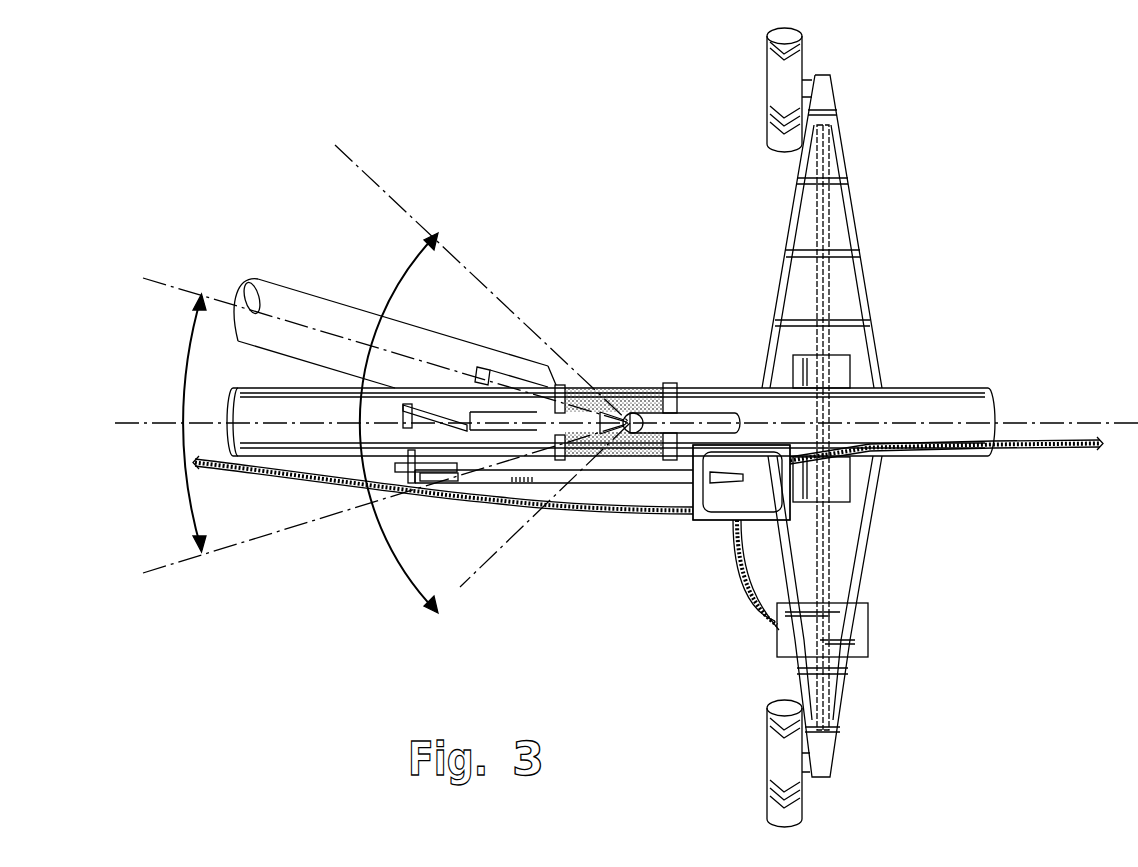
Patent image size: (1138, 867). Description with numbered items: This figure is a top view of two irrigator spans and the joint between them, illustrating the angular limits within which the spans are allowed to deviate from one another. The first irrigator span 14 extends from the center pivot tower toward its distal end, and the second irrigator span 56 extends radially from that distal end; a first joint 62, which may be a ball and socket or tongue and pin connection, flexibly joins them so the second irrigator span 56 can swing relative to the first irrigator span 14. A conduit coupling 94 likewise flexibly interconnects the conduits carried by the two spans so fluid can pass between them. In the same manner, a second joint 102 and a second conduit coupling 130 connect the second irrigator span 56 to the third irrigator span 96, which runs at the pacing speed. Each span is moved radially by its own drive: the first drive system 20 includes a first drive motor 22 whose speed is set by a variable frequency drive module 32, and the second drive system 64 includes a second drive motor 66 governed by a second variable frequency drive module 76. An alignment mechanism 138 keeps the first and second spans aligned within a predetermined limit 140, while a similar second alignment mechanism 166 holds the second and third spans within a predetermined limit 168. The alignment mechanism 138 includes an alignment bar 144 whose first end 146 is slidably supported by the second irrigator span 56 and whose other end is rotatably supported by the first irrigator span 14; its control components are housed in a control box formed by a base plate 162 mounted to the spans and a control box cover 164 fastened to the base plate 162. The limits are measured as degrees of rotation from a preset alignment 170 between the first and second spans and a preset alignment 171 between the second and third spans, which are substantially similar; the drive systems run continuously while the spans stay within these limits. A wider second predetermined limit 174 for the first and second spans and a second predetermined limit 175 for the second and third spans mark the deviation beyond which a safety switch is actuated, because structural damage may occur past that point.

The first irrigator span 14 is at (648, 369).
The second irrigator span 56 is at (945, 386).
The first drive system 20 is at (930, 427).
The second drive system 64 is at (908, 550).
The first drive motor 22 is at (911, 488).
The second drive motor 66 is at (852, 484).
The variable frequency drive module 32 is at (892, 648).
The second variable frequency drive module 76 is at (868, 625).
The third irrigator span 96 is at (290, 384).
The first joint 62 is at (669, 353).
The second joint 102 is at (650, 385).
The conduit coupling 94 is at (540, 382).
The second conduit coupling 130 is at (617, 385).
The alignment mechanism 138 is at (662, 557).
The second alignment mechanism 166 is at (708, 540).
The predetermined limit 140 is at (193, 377).
The predetermined limit 168 is at (190, 362).
The alignment bar 144 is at (623, 484).
The first end 146 is at (420, 484).
The base plate 162 is at (697, 521).
The control box cover 164 is at (722, 522).
The preset alignment 170 is at (587, 366).
The preset alignment 171 is at (147, 424).
The second predetermined limit 174 is at (335, 434).
The second predetermined limit 175 is at (387, 558).